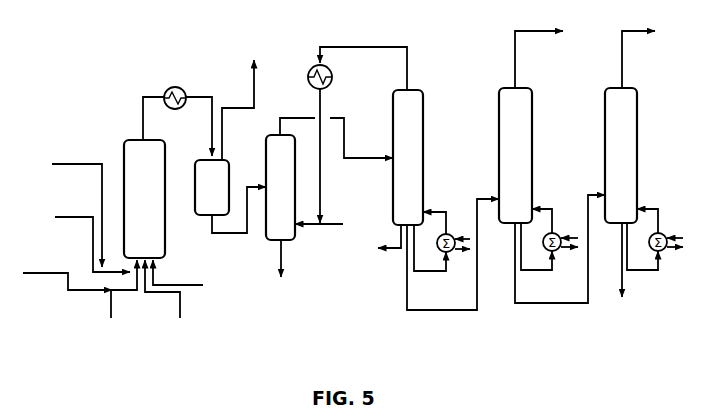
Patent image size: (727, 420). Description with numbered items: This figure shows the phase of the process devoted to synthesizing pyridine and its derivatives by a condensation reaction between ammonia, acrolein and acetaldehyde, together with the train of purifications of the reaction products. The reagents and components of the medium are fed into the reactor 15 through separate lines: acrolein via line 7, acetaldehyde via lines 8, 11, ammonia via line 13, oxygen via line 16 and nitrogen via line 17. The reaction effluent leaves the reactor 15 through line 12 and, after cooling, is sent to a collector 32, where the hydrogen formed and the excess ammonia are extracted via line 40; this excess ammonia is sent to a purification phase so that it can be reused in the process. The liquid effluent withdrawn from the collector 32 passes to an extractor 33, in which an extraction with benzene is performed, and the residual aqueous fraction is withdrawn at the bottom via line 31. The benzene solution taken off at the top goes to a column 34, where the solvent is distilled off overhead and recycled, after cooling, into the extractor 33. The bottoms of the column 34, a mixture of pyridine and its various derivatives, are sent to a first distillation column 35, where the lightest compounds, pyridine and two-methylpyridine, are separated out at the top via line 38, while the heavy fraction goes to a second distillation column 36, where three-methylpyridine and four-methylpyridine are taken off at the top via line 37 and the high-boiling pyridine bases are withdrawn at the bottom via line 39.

The acrolein line 7 is at (165, 303).
The acetaldehyde line 8 is at (105, 318).
The acetaldehyde line 11 is at (80, 268).
The reaction effluent line 12 is at (160, 120).
The ammonia line 13 is at (188, 272).
The reactor 15 is at (144, 199).
The oxygen line 16 is at (77, 234).
The nitrogen line 17 is at (62, 208).
The residual aqueous fraction line 31 is at (283, 274).
The collector 32 is at (212, 187).
The extractor 33 is at (280, 187).
The column 34 is at (408, 157).
The first distillation column 35 is at (515, 155).
The second distillation column 36 is at (621, 155).
The overhead line of second distillation column 37 is at (653, 56).
The overhead line of first distillation column 38 is at (554, 55).
The heavy pyridine bases line 39 is at (629, 280).
The hydrogen and excess ammonia line 40 is at (244, 99).